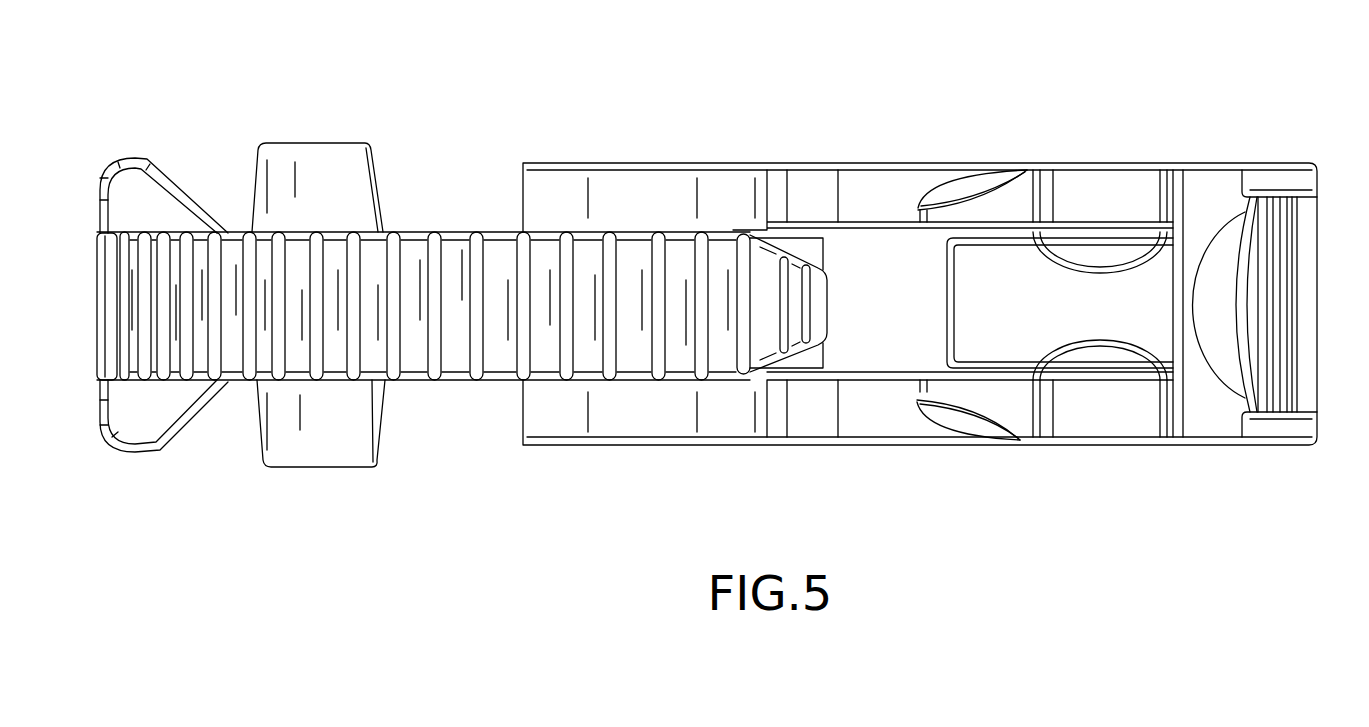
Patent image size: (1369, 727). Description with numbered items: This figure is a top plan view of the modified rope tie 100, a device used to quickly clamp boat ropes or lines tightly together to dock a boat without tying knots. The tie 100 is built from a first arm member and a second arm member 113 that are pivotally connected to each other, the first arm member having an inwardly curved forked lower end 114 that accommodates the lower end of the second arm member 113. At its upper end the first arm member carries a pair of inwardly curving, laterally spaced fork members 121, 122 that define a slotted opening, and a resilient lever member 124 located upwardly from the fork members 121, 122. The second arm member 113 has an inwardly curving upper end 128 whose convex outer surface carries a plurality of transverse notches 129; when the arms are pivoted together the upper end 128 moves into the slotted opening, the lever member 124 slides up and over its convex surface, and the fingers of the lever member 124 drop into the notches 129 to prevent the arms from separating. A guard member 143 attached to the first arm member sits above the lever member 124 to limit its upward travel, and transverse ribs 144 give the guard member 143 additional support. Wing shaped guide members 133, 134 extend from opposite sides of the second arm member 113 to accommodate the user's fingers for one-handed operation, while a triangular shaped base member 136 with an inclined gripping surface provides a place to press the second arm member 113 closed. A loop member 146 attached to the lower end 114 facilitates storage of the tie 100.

The rope tie 100 is at (1122, 90).
The second arm member 113 is at (232, 230).
The forked lower end 114 is at (588, 445).
The fork member 121 is at (977, 435).
The fork member 122 is at (963, 182).
The lever member 124 is at (1090, 262).
The upper end 128 is at (462, 230).
The transverse notches 129 is at (460, 355).
The guide member 133 is at (322, 468).
The guide member 134 is at (312, 143).
The base member 136 is at (137, 455).
The guard member 143 is at (1210, 428).
The transverse ribs 144 is at (1293, 318).
The loop member 146 is at (943, 310).